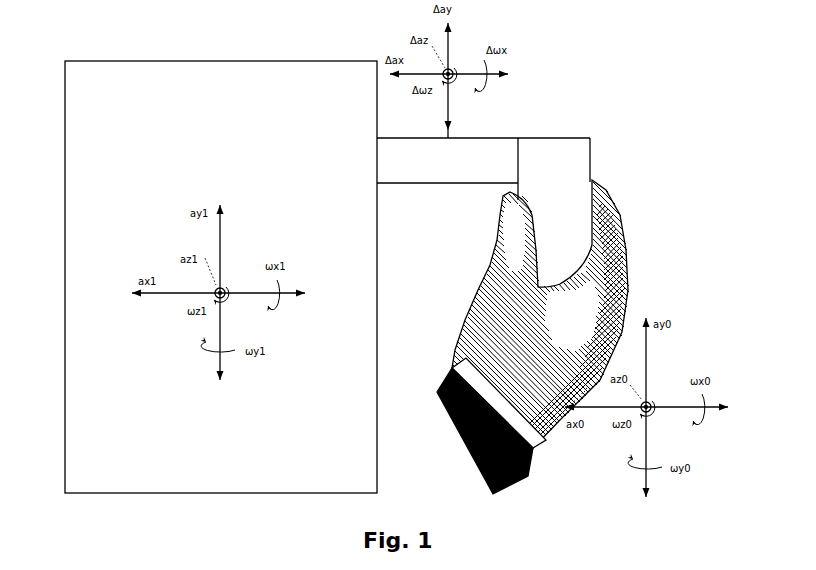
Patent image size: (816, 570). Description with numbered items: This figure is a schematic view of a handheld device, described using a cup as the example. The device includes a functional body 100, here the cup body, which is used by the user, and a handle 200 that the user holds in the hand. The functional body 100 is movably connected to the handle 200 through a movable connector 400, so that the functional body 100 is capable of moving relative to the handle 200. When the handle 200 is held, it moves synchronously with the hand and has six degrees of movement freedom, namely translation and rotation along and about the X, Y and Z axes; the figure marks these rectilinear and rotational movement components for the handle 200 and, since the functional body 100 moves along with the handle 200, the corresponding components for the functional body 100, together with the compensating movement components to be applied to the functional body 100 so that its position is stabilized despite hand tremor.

The functional body 100 is at (181, 100).
The handle 200 is at (590, 162).
The movable connector 400 is at (508, 147).